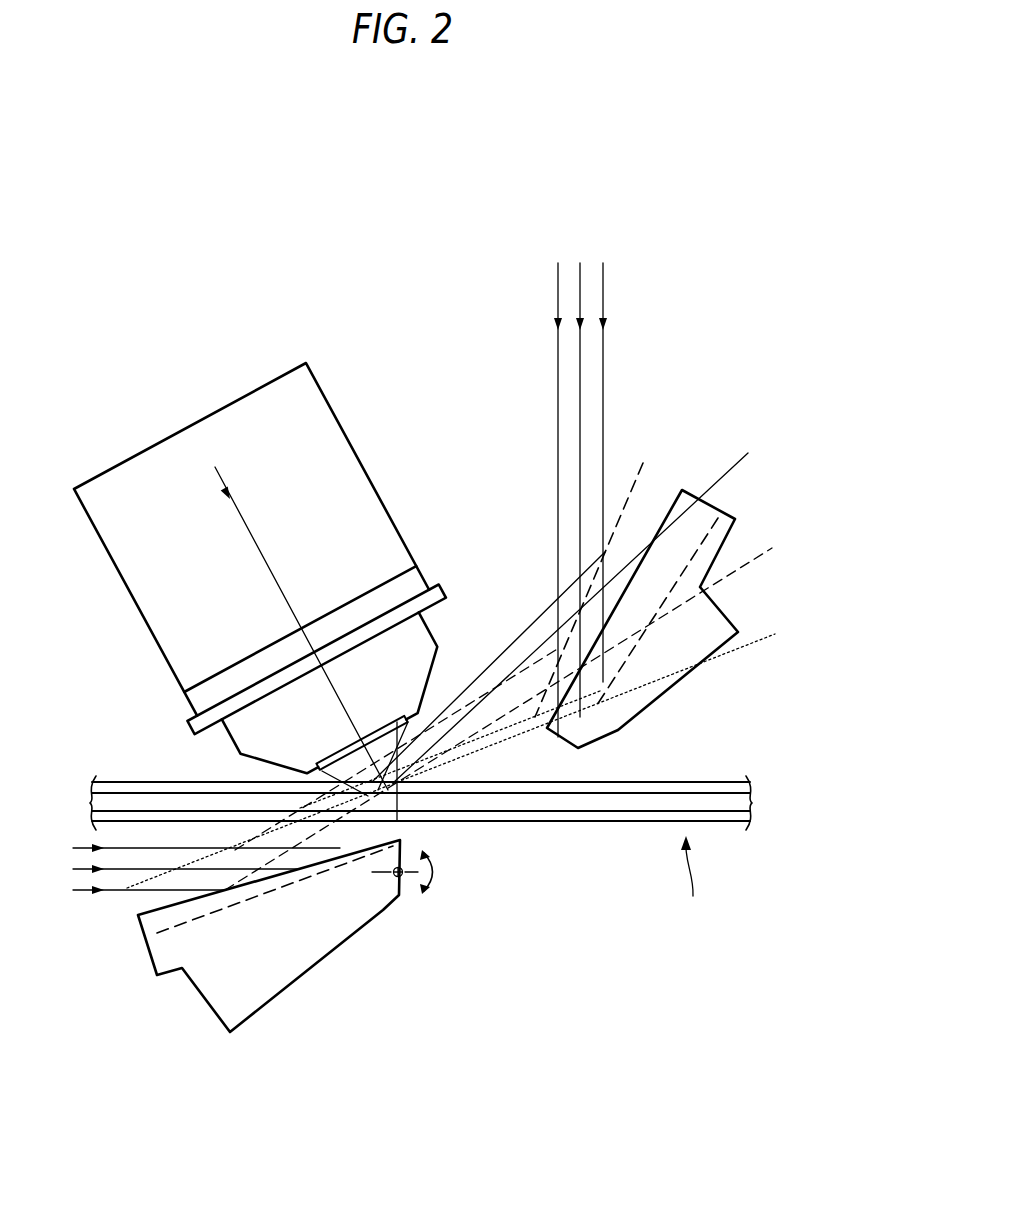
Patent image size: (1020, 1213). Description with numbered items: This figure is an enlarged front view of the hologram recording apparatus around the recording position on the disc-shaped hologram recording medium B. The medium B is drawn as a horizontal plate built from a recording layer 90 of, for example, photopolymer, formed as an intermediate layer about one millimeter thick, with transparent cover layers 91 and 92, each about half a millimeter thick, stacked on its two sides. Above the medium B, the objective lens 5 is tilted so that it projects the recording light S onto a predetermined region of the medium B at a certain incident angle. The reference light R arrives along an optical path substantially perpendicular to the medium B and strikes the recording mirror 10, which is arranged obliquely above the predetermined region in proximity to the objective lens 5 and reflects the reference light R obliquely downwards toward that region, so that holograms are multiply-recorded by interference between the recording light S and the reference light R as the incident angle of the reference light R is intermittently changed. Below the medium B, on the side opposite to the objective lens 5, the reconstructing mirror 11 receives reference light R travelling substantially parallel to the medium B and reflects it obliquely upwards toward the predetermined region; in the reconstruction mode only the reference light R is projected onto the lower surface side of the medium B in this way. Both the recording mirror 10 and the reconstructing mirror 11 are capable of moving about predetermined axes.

The objective lens 5 is at (340, 418).
The recording light S is at (227, 489).
The reference light R is at (603, 364).
The recording mirror 10 is at (712, 504).
The reconstructing mirror 11 is at (167, 960).
The recording layer 90 is at (469, 791).
The cover layer 91 is at (752, 784).
The cover layer 92 is at (746, 818).
The hologram recording medium B is at (690, 880).